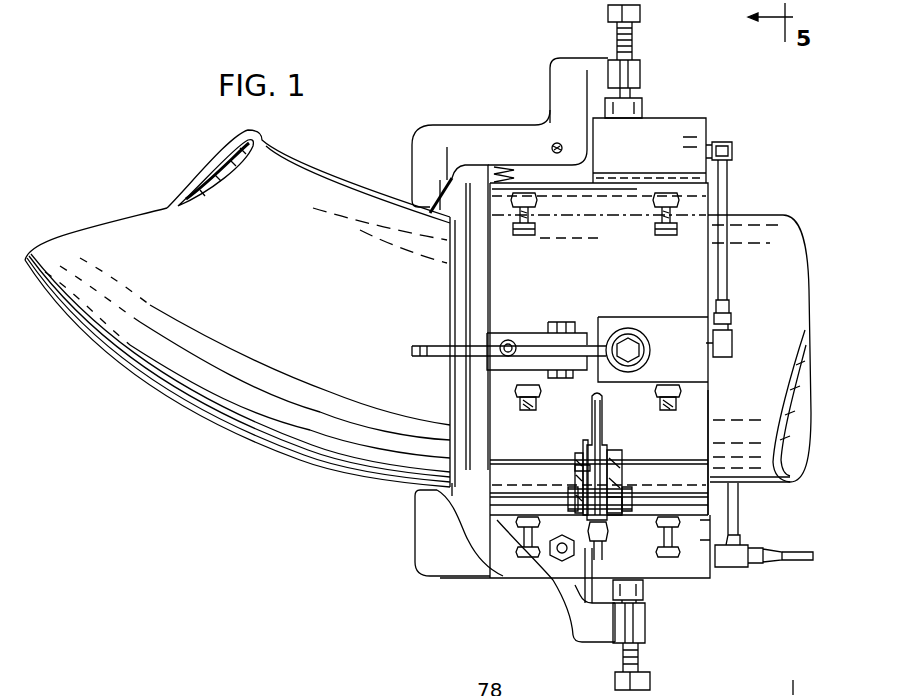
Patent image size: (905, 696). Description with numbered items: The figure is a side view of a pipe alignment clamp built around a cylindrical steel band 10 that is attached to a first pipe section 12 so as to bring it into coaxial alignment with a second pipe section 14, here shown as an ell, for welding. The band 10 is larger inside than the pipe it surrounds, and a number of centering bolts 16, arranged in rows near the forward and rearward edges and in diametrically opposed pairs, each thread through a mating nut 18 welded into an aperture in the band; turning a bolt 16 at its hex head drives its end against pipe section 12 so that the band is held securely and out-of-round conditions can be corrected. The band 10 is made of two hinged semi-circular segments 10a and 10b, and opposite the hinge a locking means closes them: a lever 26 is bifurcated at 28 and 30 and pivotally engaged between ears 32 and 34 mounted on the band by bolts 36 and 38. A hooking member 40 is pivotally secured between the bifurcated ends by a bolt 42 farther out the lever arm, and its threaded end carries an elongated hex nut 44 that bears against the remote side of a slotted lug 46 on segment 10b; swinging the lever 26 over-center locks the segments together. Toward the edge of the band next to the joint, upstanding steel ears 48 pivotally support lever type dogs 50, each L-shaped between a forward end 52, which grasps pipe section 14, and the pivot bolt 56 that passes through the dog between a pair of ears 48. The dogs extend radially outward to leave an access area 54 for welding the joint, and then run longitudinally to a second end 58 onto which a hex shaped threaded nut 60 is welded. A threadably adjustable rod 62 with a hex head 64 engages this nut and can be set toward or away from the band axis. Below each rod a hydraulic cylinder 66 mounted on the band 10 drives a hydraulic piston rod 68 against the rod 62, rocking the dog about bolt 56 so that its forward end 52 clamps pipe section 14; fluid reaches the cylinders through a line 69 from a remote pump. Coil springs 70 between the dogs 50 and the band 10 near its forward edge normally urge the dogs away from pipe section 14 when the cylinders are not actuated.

The cylindrical steel band 10 is at (688, 259).
The semi-circular segment 10a is at (700, 442).
The semi-circular segment 10b is at (700, 508).
The first pipe section 12 is at (770, 217).
The second pipe section 14 is at (106, 228).
The centering bolt 16 is at (535, 208).
The mating nut 18 is at (657, 228).
The lever 26 is at (595, 410).
The bifurcated portion of lever 28 is at (583, 463).
The bifurcated portion of lever 30 is at (612, 493).
The ear 32 is at (585, 457).
The ear 34 is at (607, 457).
The bolt 36 is at (572, 541).
The bolt 38 is at (620, 505).
The hooking member 40 is at (603, 542).
The bolt 42 is at (587, 468).
The elongated hex nut 44 is at (593, 567).
The lug 46 is at (587, 580).
The upstanding steel ear 48 is at (577, 138).
The lever type dog 50 is at (455, 128).
The forward end of dog 52 is at (417, 198).
The access area 54 is at (452, 177).
The bolt 56 is at (552, 145).
The second end of dog 58 is at (647, 72).
The hex shaped threaded nut 60 is at (638, 68).
The threadably adjustable rod 62 is at (618, 38).
The hex head 64 is at (608, 12).
The hydraulic cylinder 66 is at (680, 120).
The hydraulic piston rod 68 is at (640, 100).
The hydraulic line 69 is at (727, 147).
The coil spring 70 is at (490, 170).